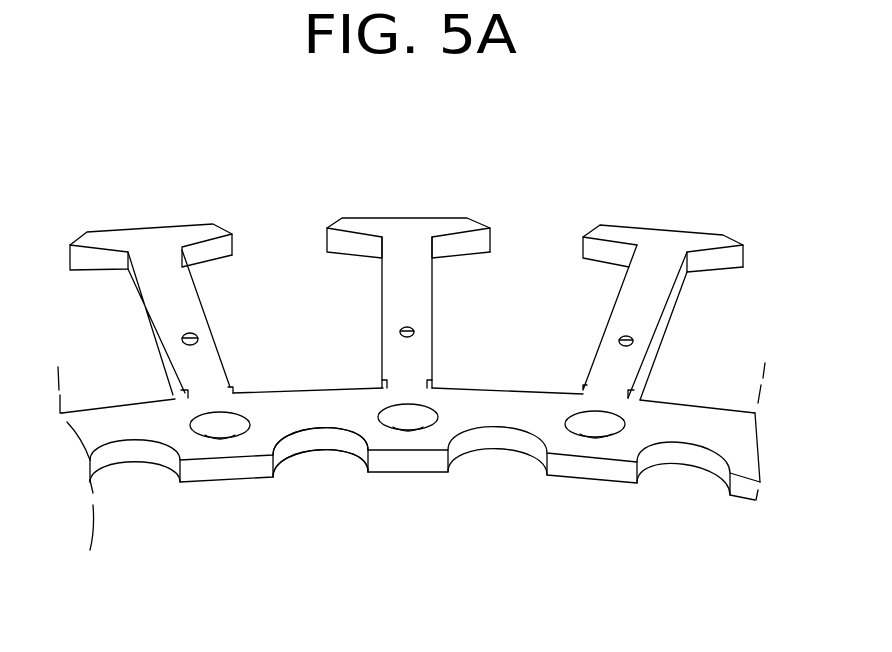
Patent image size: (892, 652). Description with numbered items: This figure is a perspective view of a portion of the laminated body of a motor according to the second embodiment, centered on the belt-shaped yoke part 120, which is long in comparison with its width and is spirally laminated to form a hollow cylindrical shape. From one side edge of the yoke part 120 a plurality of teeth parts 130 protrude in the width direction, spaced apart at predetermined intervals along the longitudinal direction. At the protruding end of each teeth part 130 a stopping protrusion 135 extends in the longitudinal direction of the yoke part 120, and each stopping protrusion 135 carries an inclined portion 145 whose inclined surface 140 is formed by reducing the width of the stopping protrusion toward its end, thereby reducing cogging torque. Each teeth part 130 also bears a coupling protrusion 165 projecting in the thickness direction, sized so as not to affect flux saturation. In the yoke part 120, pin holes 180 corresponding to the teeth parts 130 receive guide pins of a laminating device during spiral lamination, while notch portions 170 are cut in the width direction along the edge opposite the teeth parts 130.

The yoke part 120 is at (408, 460).
The teeth part 130 is at (160, 253).
The stopping protrusion 135 is at (461, 228).
The inclined surface 140 is at (671, 271).
The inclined portion 145 is at (738, 237).
The coupling protrusion 165 is at (407, 327).
The notch portion 170 is at (332, 438).
The pin hole 180 is at (227, 423).